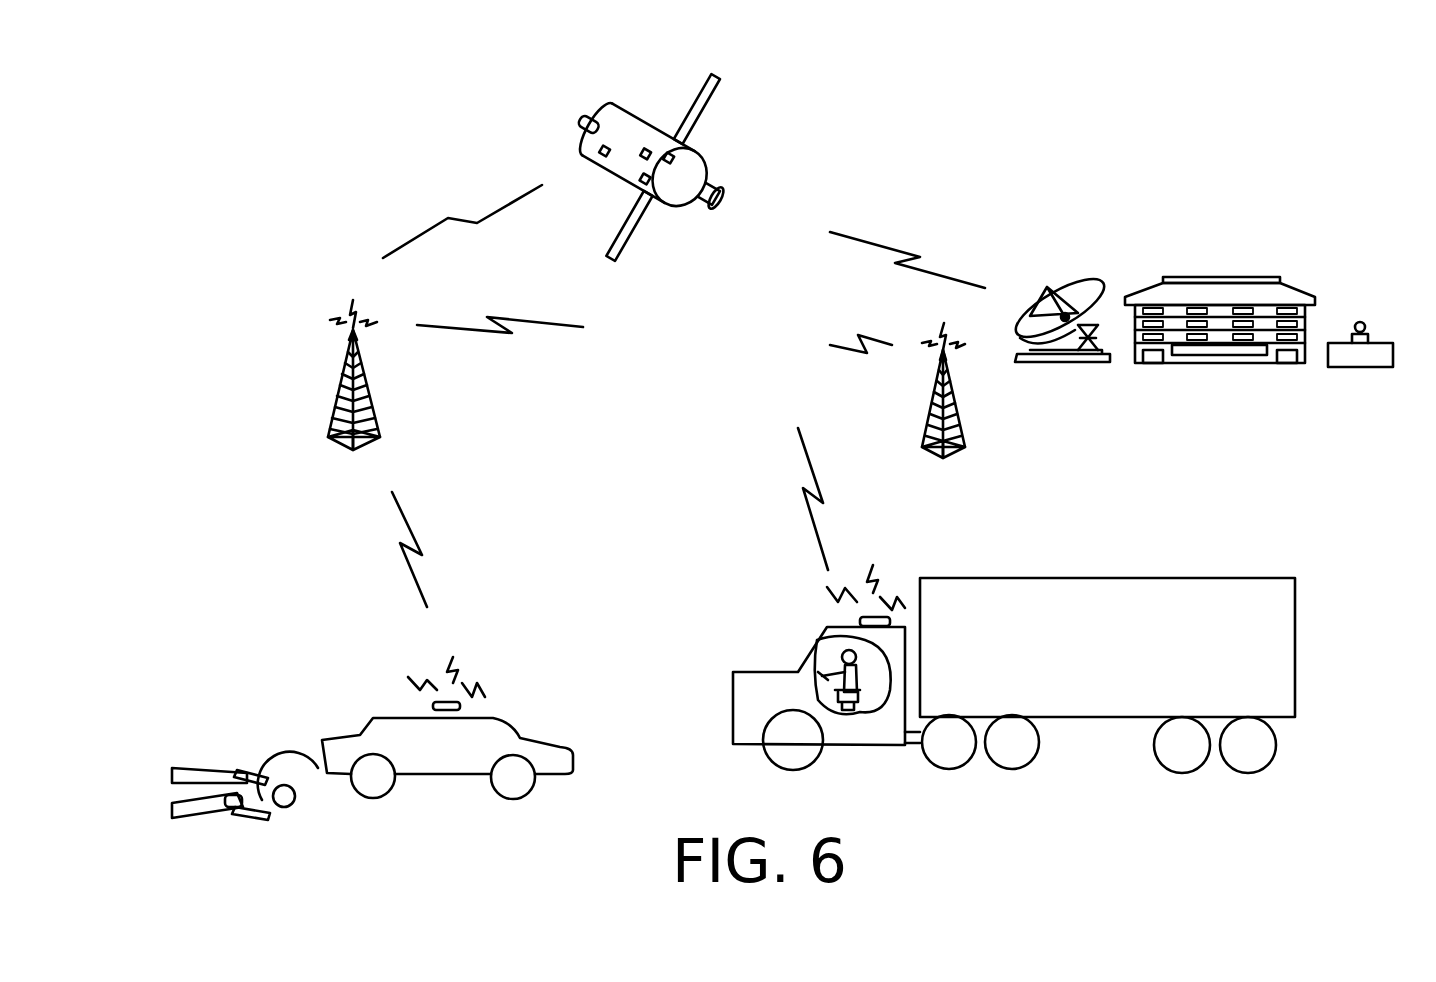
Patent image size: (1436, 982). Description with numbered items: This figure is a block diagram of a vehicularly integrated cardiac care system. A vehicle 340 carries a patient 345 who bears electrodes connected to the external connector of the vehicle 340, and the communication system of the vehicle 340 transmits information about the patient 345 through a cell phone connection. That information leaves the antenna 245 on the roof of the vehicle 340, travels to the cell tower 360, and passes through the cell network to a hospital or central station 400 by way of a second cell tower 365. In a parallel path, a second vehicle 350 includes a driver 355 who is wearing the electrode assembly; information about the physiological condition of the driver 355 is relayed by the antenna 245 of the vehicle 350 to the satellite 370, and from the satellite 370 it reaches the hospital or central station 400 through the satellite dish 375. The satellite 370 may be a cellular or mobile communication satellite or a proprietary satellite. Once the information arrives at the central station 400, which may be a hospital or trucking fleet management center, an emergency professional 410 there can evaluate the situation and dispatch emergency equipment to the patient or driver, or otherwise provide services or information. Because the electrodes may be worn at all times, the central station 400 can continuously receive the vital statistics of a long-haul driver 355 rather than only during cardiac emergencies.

The satellite 370 is at (652, 126).
The cell tower 360 is at (343, 378).
The cell tower 365 is at (957, 402).
The satellite dish 375 is at (1106, 290).
The central station 400 is at (1230, 280).
The emergency professional 410 is at (1393, 347).
The vehicle 340 is at (377, 718).
The antenna 245 is at (493, 713).
The patient 345 is at (270, 812).
The vehicle 350 is at (1090, 580).
The driver 355 is at (845, 720).